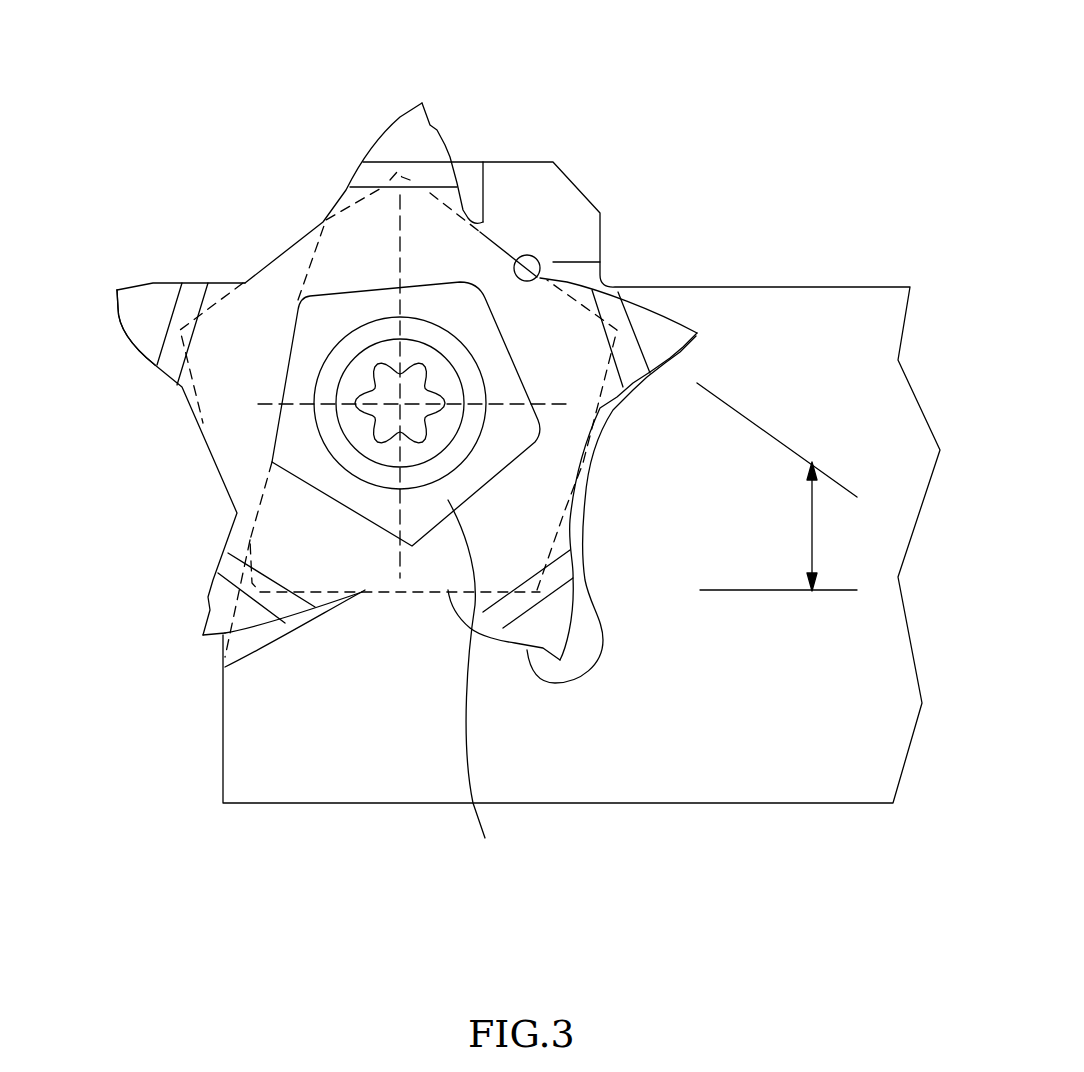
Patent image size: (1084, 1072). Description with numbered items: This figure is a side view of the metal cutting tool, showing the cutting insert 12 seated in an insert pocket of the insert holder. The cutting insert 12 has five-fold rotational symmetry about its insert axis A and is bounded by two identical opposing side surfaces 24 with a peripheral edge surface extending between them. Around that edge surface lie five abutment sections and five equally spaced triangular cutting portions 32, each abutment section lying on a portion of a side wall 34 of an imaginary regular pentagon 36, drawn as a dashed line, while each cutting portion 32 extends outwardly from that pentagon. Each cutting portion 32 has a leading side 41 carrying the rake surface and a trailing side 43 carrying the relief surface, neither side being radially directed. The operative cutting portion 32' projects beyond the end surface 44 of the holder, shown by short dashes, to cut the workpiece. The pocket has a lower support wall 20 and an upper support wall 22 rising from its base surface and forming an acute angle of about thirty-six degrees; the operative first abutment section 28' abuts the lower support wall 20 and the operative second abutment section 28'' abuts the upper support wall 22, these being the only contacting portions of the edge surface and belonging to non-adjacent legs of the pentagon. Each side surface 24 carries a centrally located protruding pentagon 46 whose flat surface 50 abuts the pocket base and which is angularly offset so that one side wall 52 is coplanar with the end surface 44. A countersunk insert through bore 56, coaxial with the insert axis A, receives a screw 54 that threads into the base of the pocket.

The cutting insert 12 is at (321, 153).
The lower support wall 20 is at (440, 590).
The upper support wall 22 is at (547, 268).
The side surface 24 is at (231, 368).
The operative first abutment section 28' is at (308, 730).
The operative second abutment section 28'' is at (588, 207).
The cutting portion 32 is at (540, 193).
The operative cutting portion 32' is at (138, 277).
The side wall of imaginary regular pentagon 34 is at (583, 533).
The imaginary regular pentagon 36 is at (430, 193).
The leading side 41 is at (195, 274).
The trailing side 43 is at (155, 372).
The end surface 44 is at (258, 507).
The protruding pentagon 46 is at (479, 684).
The flat surface 50 is at (477, 482).
The side wall of protruding pentagon 52 is at (273, 415).
The screw 54 is at (360, 432).
The insert through bore 56 is at (375, 472).
The insert axis A is at (397, 400).